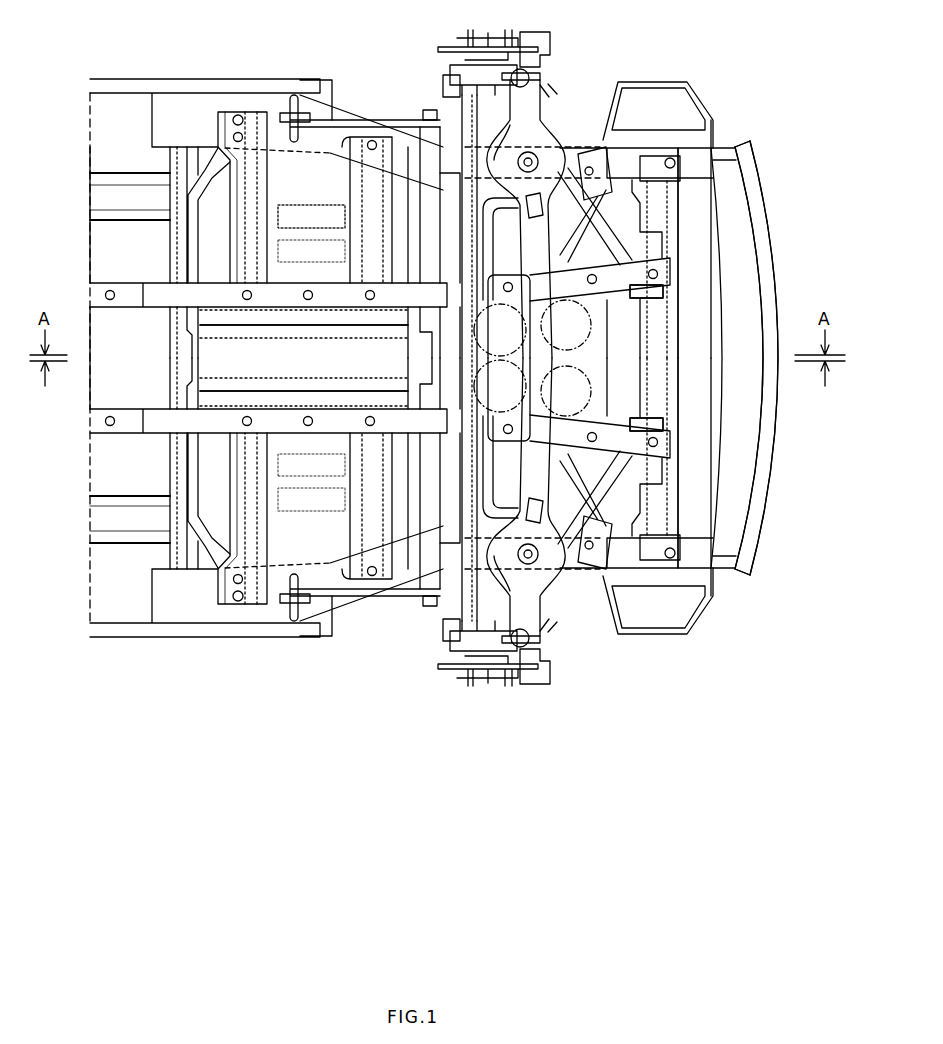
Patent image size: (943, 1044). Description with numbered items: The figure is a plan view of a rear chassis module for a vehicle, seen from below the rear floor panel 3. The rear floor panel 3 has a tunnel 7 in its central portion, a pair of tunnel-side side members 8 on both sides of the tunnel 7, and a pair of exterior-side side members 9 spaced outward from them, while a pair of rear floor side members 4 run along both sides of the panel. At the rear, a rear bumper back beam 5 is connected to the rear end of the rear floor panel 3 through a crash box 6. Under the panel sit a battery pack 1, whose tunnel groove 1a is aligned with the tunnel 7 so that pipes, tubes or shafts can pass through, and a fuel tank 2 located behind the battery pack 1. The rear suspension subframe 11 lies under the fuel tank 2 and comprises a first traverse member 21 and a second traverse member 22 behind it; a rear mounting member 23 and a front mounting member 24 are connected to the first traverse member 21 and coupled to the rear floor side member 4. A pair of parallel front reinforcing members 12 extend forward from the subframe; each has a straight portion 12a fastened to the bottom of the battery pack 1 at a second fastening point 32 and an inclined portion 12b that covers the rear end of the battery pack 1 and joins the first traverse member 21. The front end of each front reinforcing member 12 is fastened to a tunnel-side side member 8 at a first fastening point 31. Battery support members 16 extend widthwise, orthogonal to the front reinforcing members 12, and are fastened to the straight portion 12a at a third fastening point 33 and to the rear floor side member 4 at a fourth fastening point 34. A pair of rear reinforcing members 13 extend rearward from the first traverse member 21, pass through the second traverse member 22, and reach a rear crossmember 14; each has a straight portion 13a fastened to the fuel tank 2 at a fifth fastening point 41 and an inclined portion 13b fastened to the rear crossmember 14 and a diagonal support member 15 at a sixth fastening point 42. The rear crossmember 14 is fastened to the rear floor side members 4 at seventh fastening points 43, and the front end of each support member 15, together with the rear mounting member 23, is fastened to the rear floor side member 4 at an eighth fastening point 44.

The battery pack 1 is at (284, 177).
The tunnel groove 1a is at (320, 367).
The fuel tank 2 is at (660, 378).
The rear floor panel 3 is at (120, 595).
The rear floor side member 4 is at (320, 90).
The rear bumper back beam 5 is at (778, 400).
The crash box 6 is at (720, 148).
The tunnel 7 is at (125, 376).
The tunnel-side side member 8 is at (100, 283).
The exterior-side side member 9 is at (100, 183).
The rear suspension subframe 11 is at (419, 348).
The front reinforcing member 12 is at (157, 425).
The straight portion 12a is at (279, 293).
The inclined portion 12b is at (420, 262).
The rear reinforcing member 13 is at (524, 420).
The straight portion 13a is at (615, 385).
The inclined portion 13b is at (690, 420).
The rear crossmember 14 is at (660, 355).
The support member 15 is at (622, 170).
The battery support member 16 is at (230, 238).
The first traverse member 21 is at (455, 465).
The second traverse member 22 is at (655, 320).
The rear mounting member 23 is at (558, 172).
The front mounting member 24 is at (414, 110).
The first fastening point 31 is at (105, 295).
The second fastening point 32 is at (308, 290).
The third fastening point 33 is at (247, 416).
The fourth fastening point 34 is at (239, 115).
The fifth fastening point 41 is at (505, 425).
The sixth fastening point 42 is at (665, 270).
The seventh fastening point 43 is at (670, 158).
The eighth fastening point 44 is at (589, 167).